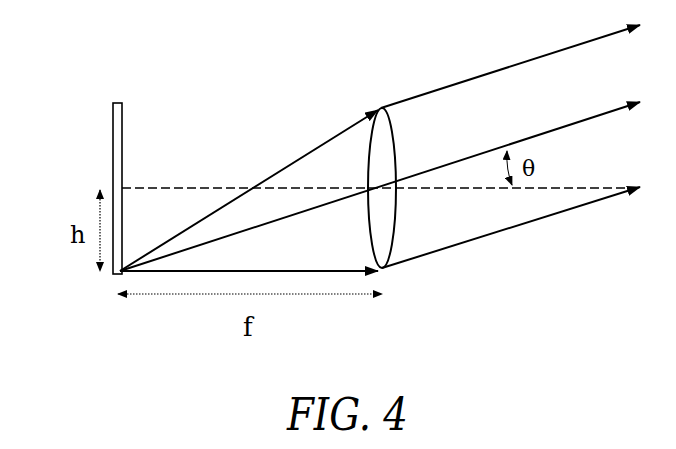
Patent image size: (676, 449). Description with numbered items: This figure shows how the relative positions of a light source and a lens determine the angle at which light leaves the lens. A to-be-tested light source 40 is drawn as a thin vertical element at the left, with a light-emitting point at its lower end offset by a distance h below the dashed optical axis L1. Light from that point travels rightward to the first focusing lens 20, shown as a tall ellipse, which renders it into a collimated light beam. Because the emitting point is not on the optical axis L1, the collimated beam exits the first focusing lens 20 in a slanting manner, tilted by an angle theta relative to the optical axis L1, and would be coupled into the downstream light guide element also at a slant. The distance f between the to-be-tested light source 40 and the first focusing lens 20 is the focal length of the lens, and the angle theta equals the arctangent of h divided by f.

The to-be-tested light source 40 is at (113, 122).
The first focusing lens 20 is at (386, 238).
The optical axis L1 is at (192, 186).